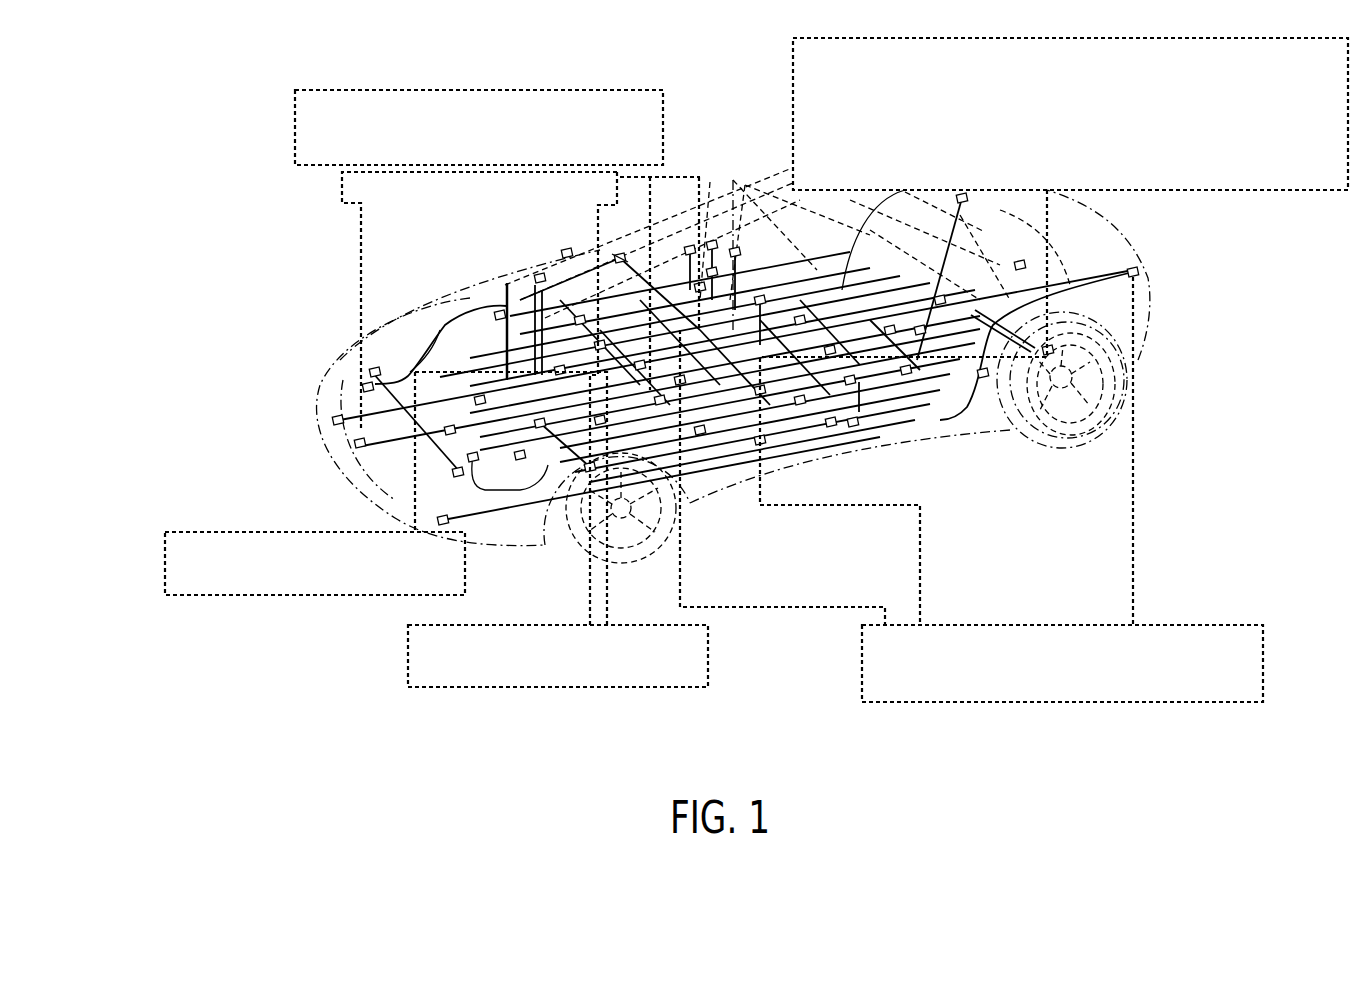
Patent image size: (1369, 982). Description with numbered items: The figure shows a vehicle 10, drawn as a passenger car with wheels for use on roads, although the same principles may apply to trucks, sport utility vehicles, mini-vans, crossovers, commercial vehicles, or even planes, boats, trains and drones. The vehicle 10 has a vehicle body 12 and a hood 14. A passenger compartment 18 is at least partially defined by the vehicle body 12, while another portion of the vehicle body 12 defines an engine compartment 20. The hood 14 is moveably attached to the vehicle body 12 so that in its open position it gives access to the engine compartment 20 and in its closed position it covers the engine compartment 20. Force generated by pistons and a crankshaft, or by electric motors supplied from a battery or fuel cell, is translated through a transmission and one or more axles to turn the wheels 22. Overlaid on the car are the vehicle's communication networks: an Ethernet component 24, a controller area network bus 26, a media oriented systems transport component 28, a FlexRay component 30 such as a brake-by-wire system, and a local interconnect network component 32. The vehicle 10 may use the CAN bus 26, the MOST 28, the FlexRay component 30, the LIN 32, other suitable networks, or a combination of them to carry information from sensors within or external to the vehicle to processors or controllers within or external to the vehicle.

The vehicle 10 is at (113, 182).
The vehicle body 12 is at (830, 352).
The hood 14 is at (452, 307).
The passenger compartment 18 is at (622, 258).
The engine compartment 20 is at (300, 375).
The wheels 22 is at (577, 533).
The Ethernet component 24 is at (147, 557).
The controller area network (CAN) bus 26 is at (270, 121).
The media oriented systems transport component (MOST) 28 is at (776, 101).
The FlexRay component 30 is at (382, 652).
The local interconnect network component (LIN) 32 is at (845, 652).